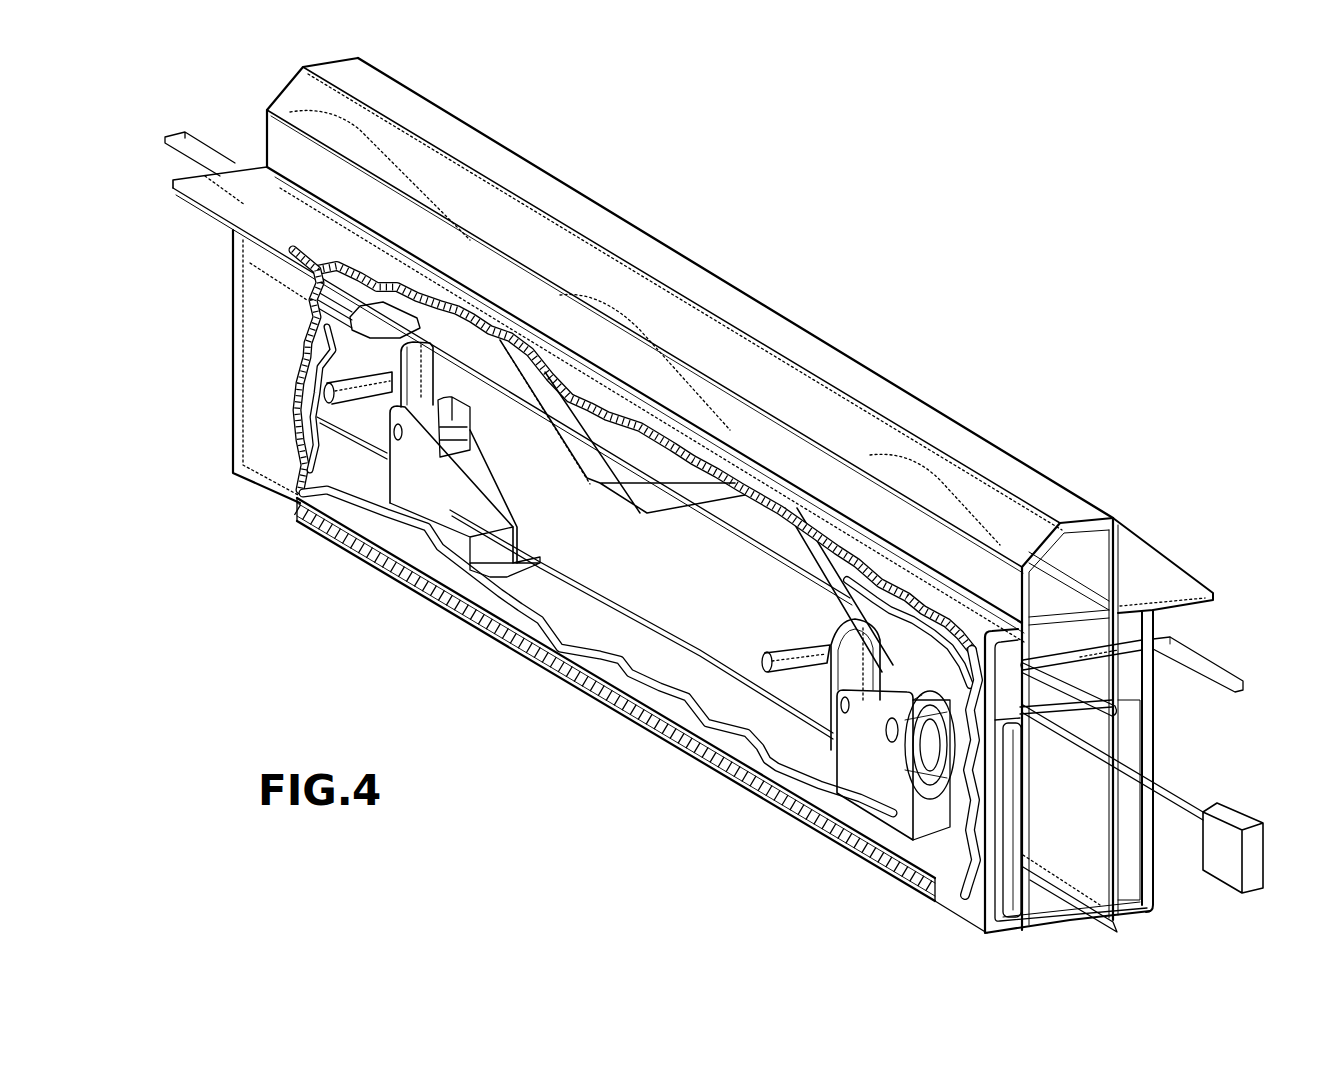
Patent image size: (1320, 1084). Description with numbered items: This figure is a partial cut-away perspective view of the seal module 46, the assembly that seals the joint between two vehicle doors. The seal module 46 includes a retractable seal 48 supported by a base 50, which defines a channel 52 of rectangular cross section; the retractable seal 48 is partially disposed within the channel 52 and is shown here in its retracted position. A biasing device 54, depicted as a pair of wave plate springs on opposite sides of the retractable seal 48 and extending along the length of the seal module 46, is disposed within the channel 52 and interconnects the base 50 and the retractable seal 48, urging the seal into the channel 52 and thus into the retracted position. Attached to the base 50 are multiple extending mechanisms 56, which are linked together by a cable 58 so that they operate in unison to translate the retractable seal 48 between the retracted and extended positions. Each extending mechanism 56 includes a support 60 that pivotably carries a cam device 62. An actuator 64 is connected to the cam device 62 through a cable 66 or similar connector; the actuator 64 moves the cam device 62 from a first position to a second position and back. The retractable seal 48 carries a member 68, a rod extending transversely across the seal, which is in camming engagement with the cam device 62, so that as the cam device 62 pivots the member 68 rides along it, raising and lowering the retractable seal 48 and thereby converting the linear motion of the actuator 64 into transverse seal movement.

The seal module 46 is at (852, 214).
The retractable seal 48 is at (945, 432).
The base 50 is at (490, 648).
The channel 52 is at (1128, 660).
The biasing device 54 is at (1200, 665).
The extending mechanism 56 is at (397, 482).
The cable 58 is at (745, 540).
The support 60 is at (447, 523).
The cam device 62 is at (380, 410).
The actuator 64 is at (1230, 812).
The cable 66 is at (1185, 790).
The member 68 is at (352, 388).